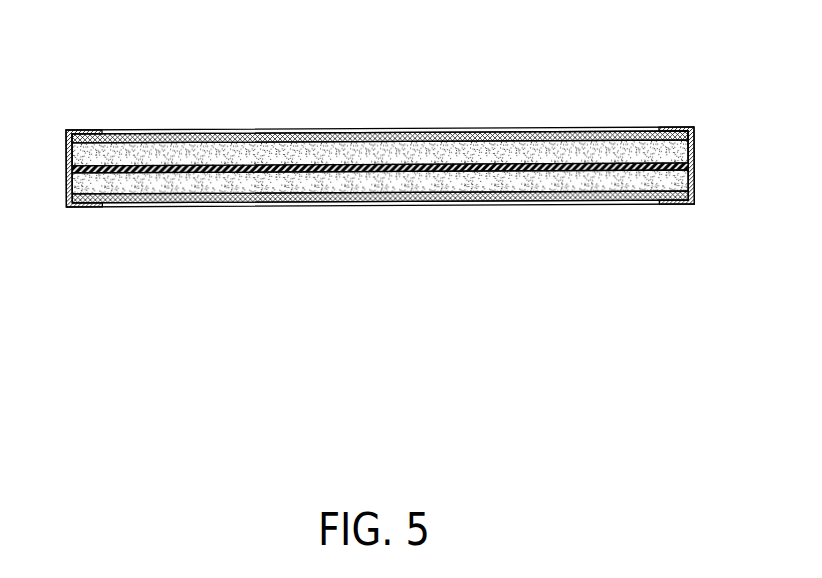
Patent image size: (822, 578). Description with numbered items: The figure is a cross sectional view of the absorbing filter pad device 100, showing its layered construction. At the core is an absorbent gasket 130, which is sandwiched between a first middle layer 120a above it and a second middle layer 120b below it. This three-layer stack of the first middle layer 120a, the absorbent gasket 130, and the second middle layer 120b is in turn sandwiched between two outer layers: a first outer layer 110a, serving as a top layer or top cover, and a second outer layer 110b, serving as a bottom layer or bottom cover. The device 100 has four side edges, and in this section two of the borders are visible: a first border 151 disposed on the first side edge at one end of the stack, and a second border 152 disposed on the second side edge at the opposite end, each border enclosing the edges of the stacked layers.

The absorbing filter pad device 100 is at (374, 310).
The first outer layer 110a is at (210, 140).
The second outer layer 110b is at (185, 199).
The first middle layer 120a is at (367, 158).
The second middle layer 120b is at (477, 186).
The absorbent gasket 130 is at (543, 164).
The first border 151 is at (66, 134).
The second border 152 is at (692, 128).